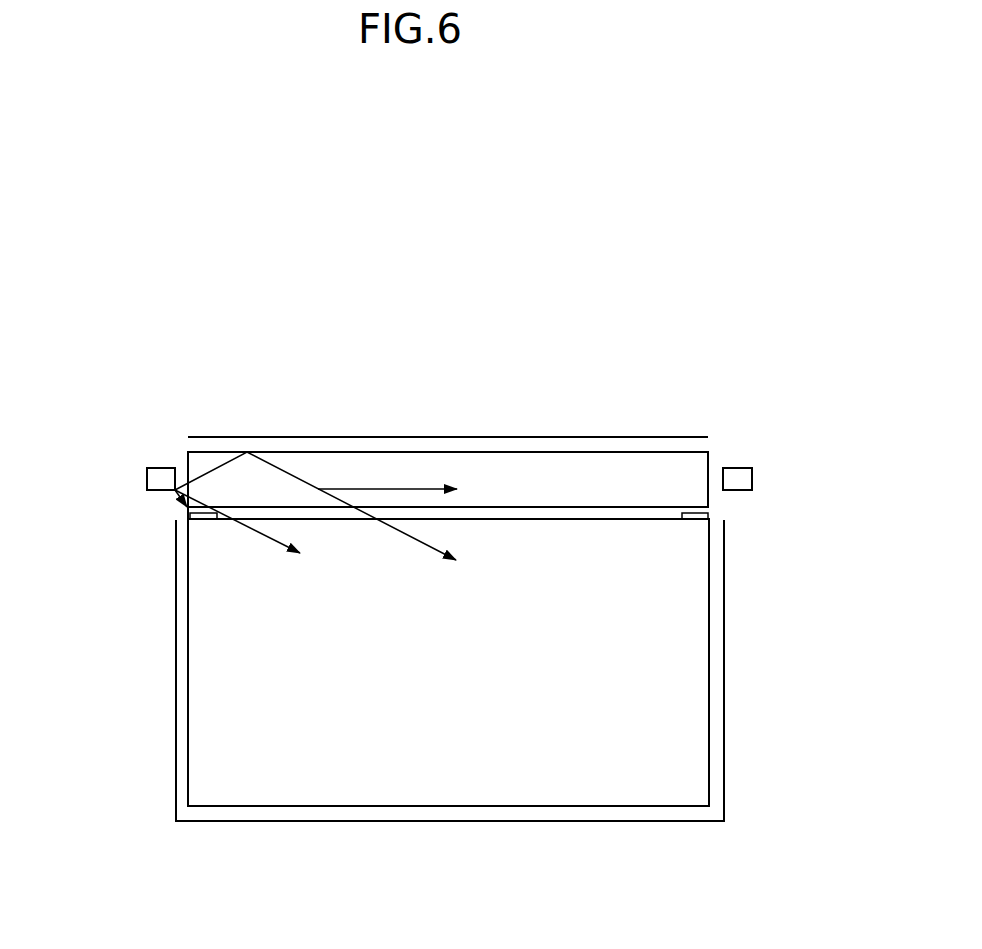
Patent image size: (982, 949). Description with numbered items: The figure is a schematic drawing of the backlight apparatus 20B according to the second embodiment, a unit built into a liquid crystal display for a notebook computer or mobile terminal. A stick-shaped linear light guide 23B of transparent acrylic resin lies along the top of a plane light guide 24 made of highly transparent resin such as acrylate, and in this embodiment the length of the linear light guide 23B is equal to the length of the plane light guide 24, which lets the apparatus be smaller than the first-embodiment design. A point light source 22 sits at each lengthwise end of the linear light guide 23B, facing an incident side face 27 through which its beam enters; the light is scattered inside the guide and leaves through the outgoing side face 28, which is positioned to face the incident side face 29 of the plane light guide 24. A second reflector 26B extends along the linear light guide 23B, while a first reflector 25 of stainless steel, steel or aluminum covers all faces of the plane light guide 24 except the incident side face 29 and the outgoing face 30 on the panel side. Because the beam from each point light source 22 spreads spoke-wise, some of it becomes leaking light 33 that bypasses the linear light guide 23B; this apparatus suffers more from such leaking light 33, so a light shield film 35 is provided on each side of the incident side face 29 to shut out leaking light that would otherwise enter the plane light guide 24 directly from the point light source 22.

The backlight apparatus 20B is at (471, 345).
The point light source 22 is at (147, 480).
The linear light guide 23B is at (535, 482).
The plane light guide 24 is at (563, 778).
The first reflector 25 is at (726, 738).
The second reflector 26B is at (413, 437).
The incident side face 27 is at (188, 462).
The outgoing side face 28 is at (655, 507).
The incident side face 29 is at (570, 518).
The outgoing face 30 is at (698, 636).
The leaking light 33 is at (174, 508).
The light shield film 35 is at (697, 513).